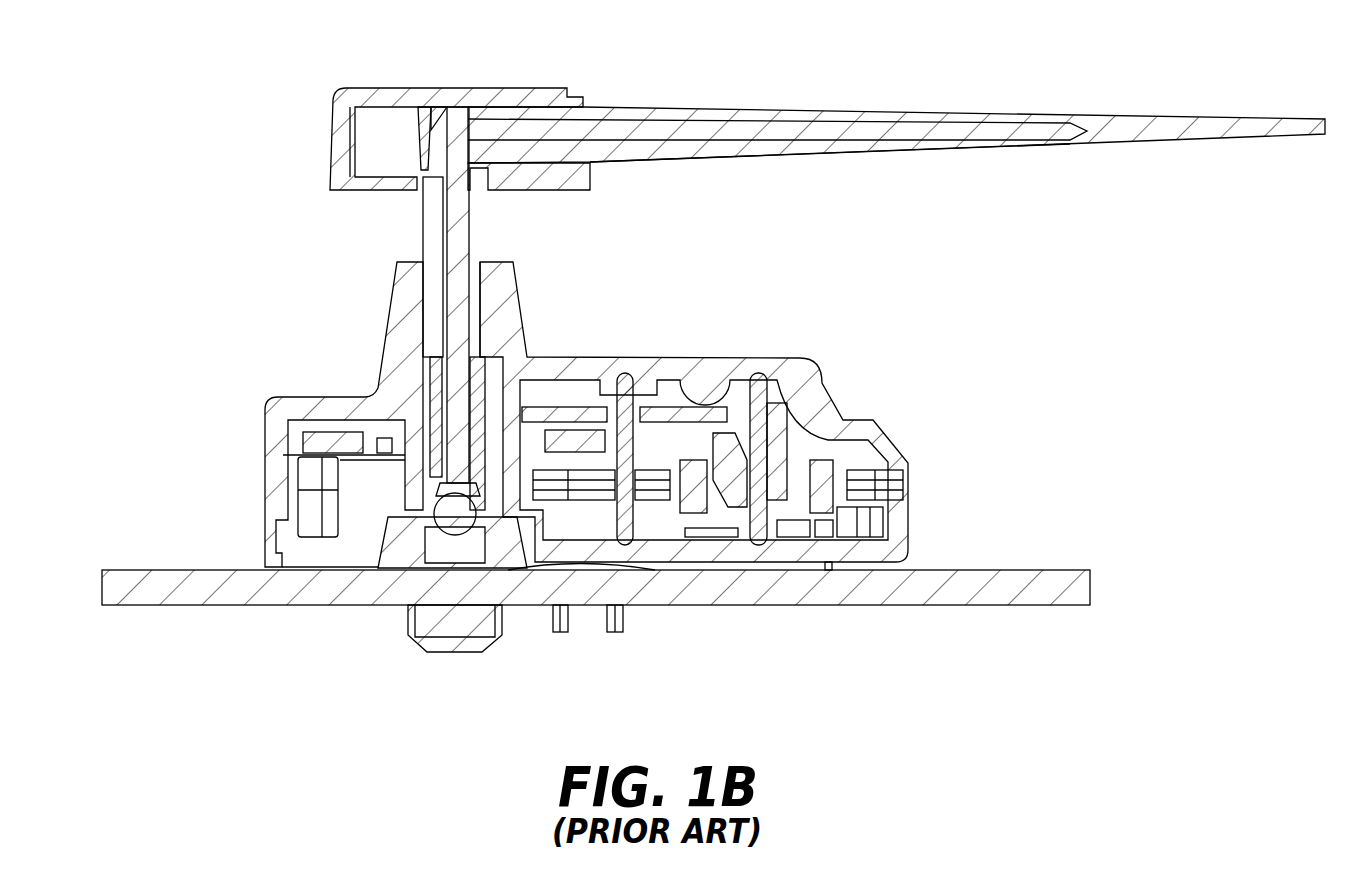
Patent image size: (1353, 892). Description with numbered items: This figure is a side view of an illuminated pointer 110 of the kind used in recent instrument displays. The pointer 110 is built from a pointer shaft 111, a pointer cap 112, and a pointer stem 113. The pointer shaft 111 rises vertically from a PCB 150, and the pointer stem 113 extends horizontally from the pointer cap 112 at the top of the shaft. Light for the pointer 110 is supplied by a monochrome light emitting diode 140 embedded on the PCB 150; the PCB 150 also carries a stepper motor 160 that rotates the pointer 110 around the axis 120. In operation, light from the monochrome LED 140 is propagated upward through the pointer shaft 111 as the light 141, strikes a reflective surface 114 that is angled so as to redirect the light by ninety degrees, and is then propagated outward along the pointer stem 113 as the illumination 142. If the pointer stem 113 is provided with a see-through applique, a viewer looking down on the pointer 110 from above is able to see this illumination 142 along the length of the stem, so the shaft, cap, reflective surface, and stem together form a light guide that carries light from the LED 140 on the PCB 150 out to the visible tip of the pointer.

The illuminated pointer 110 is at (1204, 142).
The pointer shaft 111 is at (493, 260).
The pointer cap 112 is at (578, 93).
The pointer stem 113 is at (774, 152).
The reflective surface 114 is at (437, 107).
The axis 120 is at (451, 660).
The monochrome light emitting diode (LED) 140 is at (420, 545).
The light propagated through the pointer shaft 141 is at (443, 240).
The illumination propagated through the pointer stem 142 is at (848, 123).
The PCB 150 is at (926, 607).
The stepper motor 160 is at (760, 432).